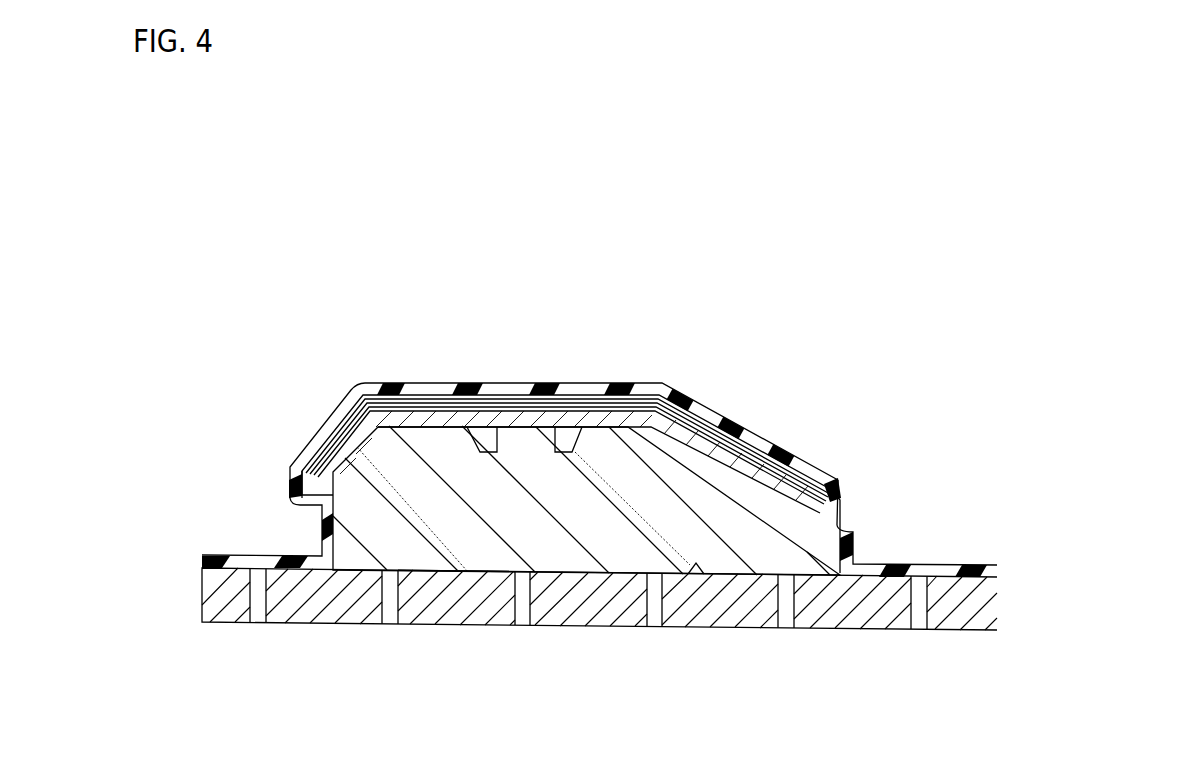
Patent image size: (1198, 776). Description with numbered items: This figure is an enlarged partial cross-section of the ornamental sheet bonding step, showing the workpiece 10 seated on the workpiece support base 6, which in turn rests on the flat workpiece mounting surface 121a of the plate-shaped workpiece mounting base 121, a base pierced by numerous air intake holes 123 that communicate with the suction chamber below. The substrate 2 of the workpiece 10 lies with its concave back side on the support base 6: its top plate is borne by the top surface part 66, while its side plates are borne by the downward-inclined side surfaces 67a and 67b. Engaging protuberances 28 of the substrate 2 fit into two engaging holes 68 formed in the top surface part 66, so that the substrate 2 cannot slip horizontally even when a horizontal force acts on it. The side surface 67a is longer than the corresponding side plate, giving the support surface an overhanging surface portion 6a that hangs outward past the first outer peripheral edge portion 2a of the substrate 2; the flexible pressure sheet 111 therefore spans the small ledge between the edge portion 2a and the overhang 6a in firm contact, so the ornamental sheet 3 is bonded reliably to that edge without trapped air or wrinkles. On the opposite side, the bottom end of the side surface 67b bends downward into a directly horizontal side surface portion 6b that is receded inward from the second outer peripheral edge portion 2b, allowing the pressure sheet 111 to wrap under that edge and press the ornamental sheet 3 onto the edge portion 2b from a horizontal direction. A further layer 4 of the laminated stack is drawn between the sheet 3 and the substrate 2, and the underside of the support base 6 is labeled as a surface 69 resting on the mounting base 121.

The substrate 2 is at (570, 447).
The first outer peripheral edge portion 2a is at (835, 488).
The second outer peripheral edge portion 2b is at (290, 480).
The ornamental sheet 3 is at (668, 407).
The layer 4 is at (697, 432).
The workpiece support base 6 is at (388, 452).
The overhanging surface portion 6a is at (847, 533).
The side surface portion 6b is at (322, 552).
The workpiece 10 is at (568, 419).
The engaging protuberances 28 is at (523, 376).
The top surface part 66 is at (423, 425).
The side surface 67a is at (768, 498).
The side surface 67b is at (380, 458).
The engaging holes 68 is at (476, 429).
The mounting surface 69 is at (477, 577).
The pressure sheet 111 is at (603, 392).
The workpiece mounting base 121 is at (437, 613).
The workpiece mounting surface 121a is at (700, 565).
The air intake holes 123 is at (653, 617).